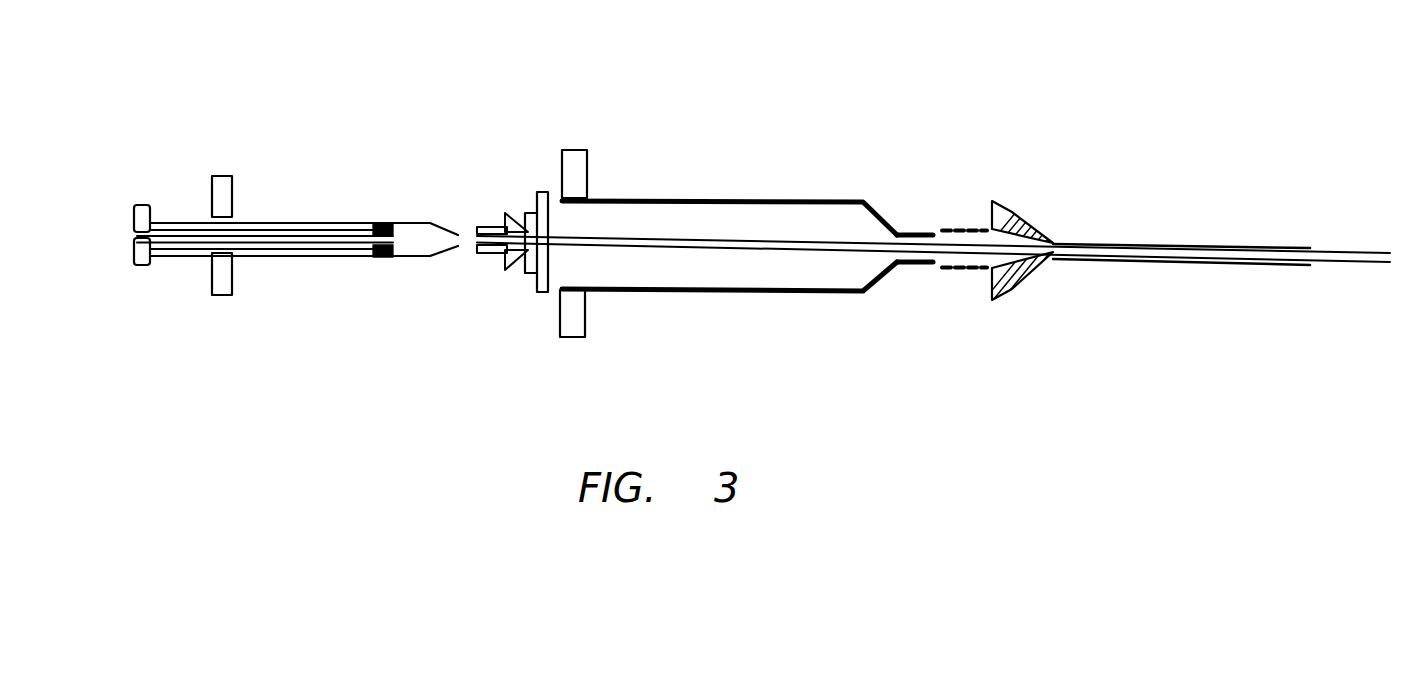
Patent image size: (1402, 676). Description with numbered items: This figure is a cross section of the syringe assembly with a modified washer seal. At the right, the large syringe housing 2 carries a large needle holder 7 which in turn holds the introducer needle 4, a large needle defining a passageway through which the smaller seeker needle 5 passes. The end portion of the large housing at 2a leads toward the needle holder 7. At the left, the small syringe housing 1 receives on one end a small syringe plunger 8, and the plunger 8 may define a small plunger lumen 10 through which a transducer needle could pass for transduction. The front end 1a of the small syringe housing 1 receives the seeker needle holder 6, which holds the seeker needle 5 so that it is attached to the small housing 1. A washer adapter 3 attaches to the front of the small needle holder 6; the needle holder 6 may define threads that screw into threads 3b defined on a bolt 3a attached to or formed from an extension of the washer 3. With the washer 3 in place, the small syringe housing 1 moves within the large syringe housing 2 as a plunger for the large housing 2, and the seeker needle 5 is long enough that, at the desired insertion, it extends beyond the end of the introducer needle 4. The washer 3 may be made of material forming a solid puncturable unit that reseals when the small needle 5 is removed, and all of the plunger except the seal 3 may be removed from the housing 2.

The small syringe housing 1 is at (383, 224).
The front end of the small syringe housing 1a is at (448, 252).
The large syringe housing 2 is at (720, 200).
The housing end portion 2a is at (898, 265).
The washer adapter 3 is at (537, 197).
The bolt 3a is at (527, 275).
The threads 3b is at (505, 214).
The introducer needle 4 is at (1182, 245).
The seeker needle 5 is at (570, 237).
The small needle holder 6 is at (507, 272).
The large needle holder 7 is at (992, 202).
The small syringe plunger 8 is at (183, 250).
The plunger lumen 10 is at (207, 231).